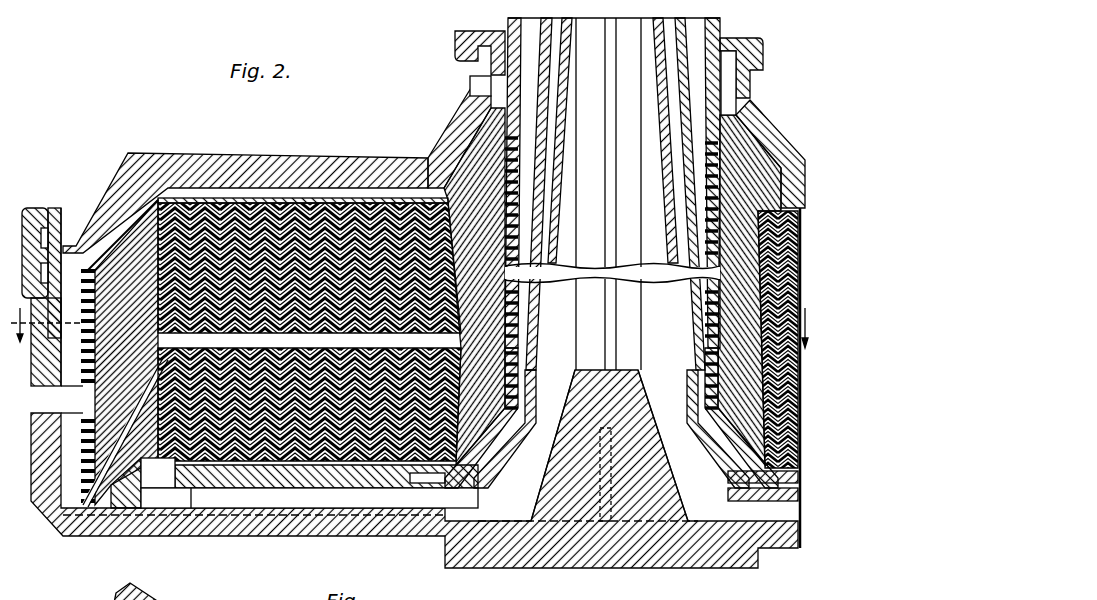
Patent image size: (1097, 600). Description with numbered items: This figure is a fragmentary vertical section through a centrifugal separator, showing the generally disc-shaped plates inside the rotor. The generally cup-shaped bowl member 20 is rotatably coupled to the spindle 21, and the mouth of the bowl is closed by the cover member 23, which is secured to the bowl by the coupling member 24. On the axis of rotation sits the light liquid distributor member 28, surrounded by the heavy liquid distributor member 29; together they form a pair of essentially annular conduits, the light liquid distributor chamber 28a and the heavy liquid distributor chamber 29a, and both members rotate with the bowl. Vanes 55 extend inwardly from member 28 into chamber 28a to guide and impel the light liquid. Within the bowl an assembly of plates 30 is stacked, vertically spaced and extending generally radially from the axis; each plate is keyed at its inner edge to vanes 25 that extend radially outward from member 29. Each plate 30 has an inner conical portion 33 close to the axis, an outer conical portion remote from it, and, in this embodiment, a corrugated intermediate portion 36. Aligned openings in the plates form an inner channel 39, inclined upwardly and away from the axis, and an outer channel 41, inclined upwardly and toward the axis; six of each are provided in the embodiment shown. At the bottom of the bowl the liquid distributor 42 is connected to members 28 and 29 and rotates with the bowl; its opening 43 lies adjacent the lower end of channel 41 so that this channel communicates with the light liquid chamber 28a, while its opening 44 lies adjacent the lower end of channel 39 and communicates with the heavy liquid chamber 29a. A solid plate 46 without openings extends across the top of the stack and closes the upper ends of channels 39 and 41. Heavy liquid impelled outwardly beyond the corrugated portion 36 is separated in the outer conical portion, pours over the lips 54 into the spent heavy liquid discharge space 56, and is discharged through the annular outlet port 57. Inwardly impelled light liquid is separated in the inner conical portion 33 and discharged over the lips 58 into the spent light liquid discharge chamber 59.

The bowl member 20 is at (45, 495).
The spindle 21 is at (635, 545).
The cover member 23 is at (247, 150).
The coupling member 24 is at (25, 200).
The vanes 25 is at (688, 30).
The light liquid distributor member 28 is at (555, 90).
The light liquid distributor chamber 28a is at (285, 497).
The heavy liquid distributor member 29 is at (667, 102).
The heavy liquid distributor chamber 29a is at (513, 434).
The plates 30 is at (160, 333).
The inner conical portion 33 is at (505, 302).
The corrugated intermediate portion 36 is at (220, 316).
The inner channel 39 is at (417, 197).
The outer channel 41 is at (163, 197).
The liquid distributor 42 is at (215, 470).
The opening 43 is at (125, 505).
The opening 44 is at (422, 470).
The solid plate 46 is at (297, 192).
The lips 54 is at (60, 366).
The vanes 55 is at (640, 230).
The spent heavy liquid discharge space 56 is at (60, 262).
The annular outlet port 57 is at (462, 75).
The lips 58 is at (545, 195).
The spent light liquid discharge chamber 59 is at (514, 12).